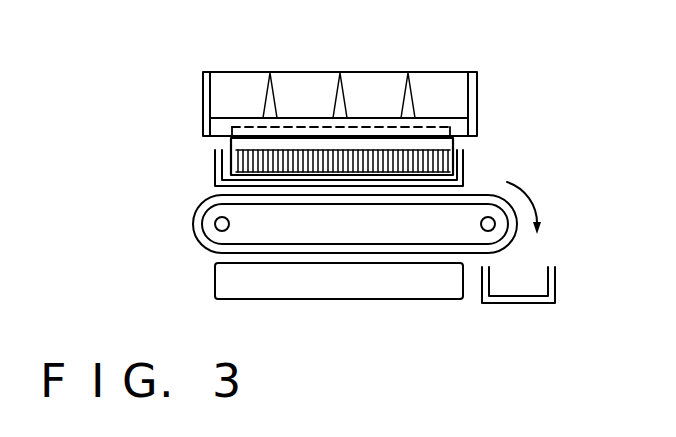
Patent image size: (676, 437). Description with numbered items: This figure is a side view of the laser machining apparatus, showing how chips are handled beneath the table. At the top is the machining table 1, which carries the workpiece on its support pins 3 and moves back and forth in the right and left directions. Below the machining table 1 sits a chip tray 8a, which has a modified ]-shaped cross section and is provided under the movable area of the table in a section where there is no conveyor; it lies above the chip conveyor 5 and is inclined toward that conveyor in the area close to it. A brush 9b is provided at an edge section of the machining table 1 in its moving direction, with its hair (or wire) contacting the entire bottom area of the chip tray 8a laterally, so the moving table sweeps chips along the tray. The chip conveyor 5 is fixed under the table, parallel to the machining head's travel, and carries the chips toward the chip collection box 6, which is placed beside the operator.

The machining table 1 is at (367, 90).
The support pins 3 is at (272, 103).
The brush 9b is at (460, 146).
The chip tray 8a is at (207, 165).
The chip conveyor 5 is at (204, 246).
The chip collection box 6 is at (505, 303).